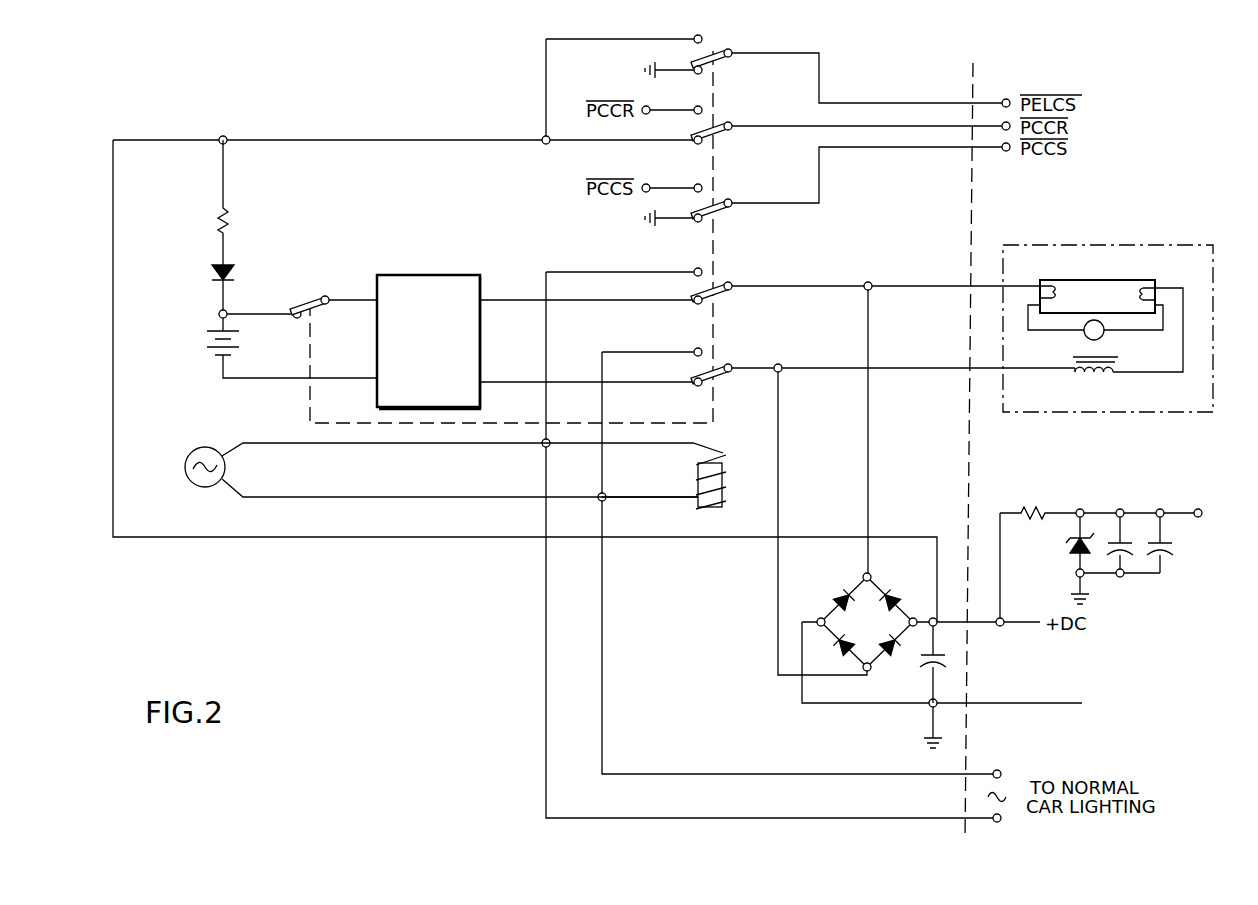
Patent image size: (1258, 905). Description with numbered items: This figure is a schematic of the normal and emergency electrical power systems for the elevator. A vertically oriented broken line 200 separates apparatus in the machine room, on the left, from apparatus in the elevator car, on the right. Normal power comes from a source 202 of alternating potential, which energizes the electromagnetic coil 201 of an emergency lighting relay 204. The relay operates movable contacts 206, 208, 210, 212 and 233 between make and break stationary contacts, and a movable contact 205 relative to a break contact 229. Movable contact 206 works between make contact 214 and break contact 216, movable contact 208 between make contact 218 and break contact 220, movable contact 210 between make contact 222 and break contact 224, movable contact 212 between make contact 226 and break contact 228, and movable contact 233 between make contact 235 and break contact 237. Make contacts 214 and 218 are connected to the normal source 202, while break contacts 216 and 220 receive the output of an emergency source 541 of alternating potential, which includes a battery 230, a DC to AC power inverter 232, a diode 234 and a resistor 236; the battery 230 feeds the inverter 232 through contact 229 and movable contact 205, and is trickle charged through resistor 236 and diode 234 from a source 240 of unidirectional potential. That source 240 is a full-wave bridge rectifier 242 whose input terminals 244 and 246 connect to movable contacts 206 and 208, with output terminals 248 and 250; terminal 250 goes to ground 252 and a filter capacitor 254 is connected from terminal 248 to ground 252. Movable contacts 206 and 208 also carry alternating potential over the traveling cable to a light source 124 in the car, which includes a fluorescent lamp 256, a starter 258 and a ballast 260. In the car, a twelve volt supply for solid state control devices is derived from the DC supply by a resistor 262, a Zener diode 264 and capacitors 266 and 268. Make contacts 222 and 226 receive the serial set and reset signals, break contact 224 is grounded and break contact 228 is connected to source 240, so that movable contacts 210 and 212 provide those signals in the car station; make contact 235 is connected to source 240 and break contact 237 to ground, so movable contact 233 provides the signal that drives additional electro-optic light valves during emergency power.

The light source 124 is at (1128, 239).
The broken line 200 is at (973, 70).
The electromagnetic coil 201 is at (715, 456).
The source of alternating potential 202 is at (202, 449).
The emergency lighting relay 204 is at (681, 480).
The movable contact 205 is at (313, 304).
The movable contact 206 is at (722, 365).
The movable contact 208 is at (722, 284).
The movable contact 210 is at (722, 201).
The movable contact 212 is at (722, 123).
The make contact 214 is at (698, 348).
The break contact 216 is at (697, 387).
The make contact 218 is at (698, 268).
The break contact 220 is at (697, 305).
The make contact 222 is at (698, 183).
The break contact 224 is at (697, 223).
The make contact 226 is at (697, 115).
The break contact 228 is at (697, 145).
The break contact 229 is at (296, 319).
The battery 230 is at (210, 344).
The DC to AC power inverter 232 is at (420, 275).
The movable contact 233 is at (722, 50).
The diode 234 is at (236, 274).
The make contact 235 is at (698, 34).
The resistor 236 is at (232, 221).
The break contact 237 is at (697, 76).
The source of unidirectional potential 240 is at (918, 683).
The full-wave bridge rectifier 242 is at (859, 611).
The input terminal 244 is at (871, 574).
The input terminal 246 is at (867, 671).
The output terminal 248 is at (915, 615).
The output terminal 250 is at (820, 618).
The ground 252 is at (929, 736).
The filter capacitor 254 is at (945, 664).
The fluorescent lamp 256 is at (1088, 280).
The starter 258 is at (1084, 337).
The ballast 260 is at (1120, 370).
The resistor 262 is at (1028, 511).
The Zener diode 264 is at (1072, 547).
The capacitor 266 is at (1112, 549).
The capacitor 268 is at (1172, 548).
The emergency source of alternating potential 541 is at (364, 352).